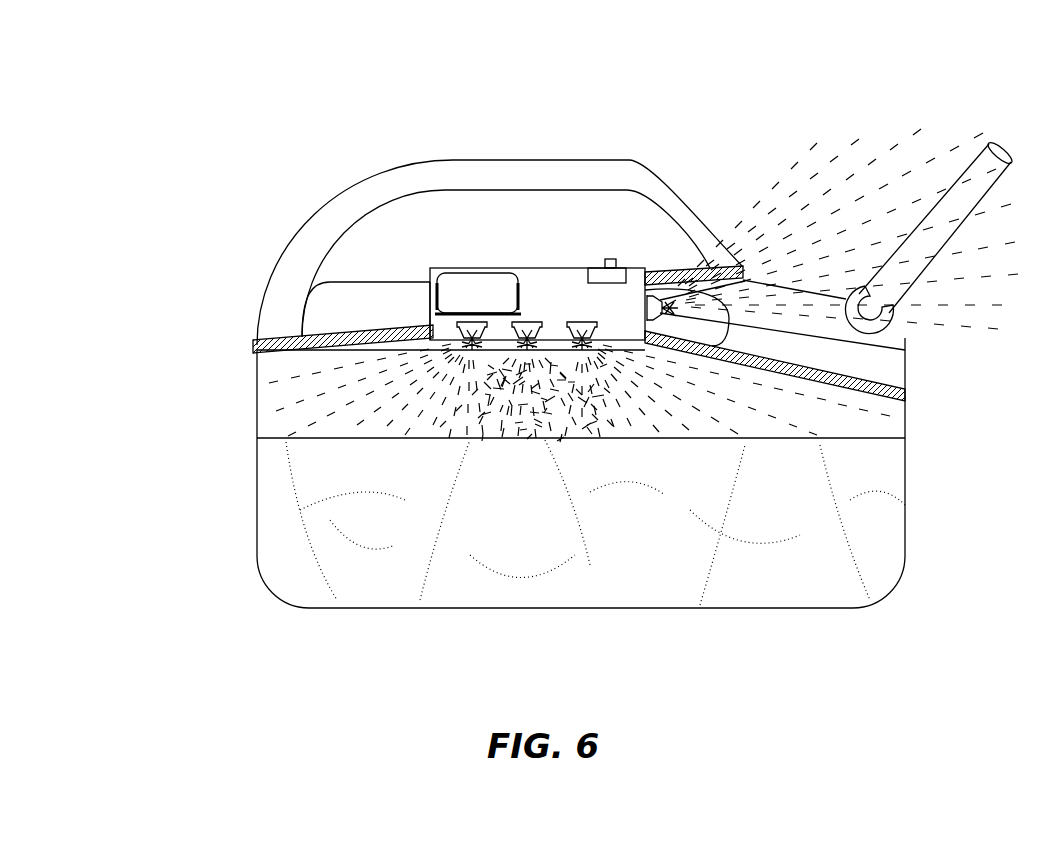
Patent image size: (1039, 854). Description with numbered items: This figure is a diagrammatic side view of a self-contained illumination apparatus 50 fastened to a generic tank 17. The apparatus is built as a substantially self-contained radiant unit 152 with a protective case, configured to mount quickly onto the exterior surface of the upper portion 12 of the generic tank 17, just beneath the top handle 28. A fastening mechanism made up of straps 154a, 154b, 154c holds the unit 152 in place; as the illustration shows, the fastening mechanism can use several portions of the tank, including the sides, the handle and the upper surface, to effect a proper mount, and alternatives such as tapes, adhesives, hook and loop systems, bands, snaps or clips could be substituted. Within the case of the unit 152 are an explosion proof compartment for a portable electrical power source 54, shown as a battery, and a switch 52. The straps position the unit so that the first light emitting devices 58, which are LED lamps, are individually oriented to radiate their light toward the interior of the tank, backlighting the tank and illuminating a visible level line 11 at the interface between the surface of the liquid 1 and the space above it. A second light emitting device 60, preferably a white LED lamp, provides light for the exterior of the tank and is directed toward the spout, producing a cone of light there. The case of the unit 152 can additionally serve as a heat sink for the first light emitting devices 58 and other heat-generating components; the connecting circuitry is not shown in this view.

The liquid 1 is at (291, 531).
The visible level line 11 is at (283, 438).
The upper portion of the tank 12 is at (377, 293).
The generic tank 17 is at (652, 550).
The top handle 28 is at (613, 175).
The illumination apparatus 50 is at (533, 290).
The switch 52 is at (612, 268).
The portable electrical power source 54 is at (457, 290).
The first light emitting device 58 is at (578, 323).
The second light emitting device 60 is at (905, 350).
The self-contained radiant unit 152 is at (432, 280).
The strap 154a is at (703, 266).
The strap 154b is at (908, 402).
The strap 154c is at (290, 337).